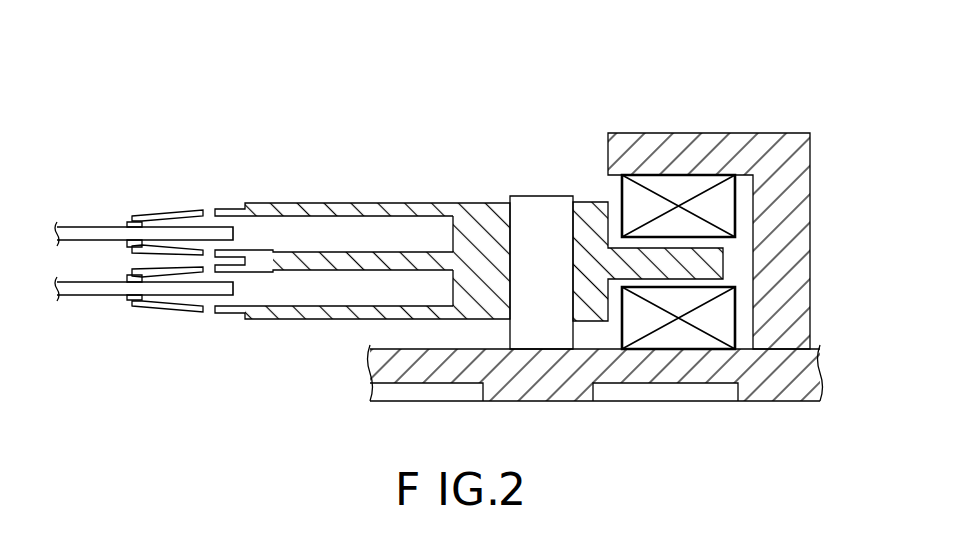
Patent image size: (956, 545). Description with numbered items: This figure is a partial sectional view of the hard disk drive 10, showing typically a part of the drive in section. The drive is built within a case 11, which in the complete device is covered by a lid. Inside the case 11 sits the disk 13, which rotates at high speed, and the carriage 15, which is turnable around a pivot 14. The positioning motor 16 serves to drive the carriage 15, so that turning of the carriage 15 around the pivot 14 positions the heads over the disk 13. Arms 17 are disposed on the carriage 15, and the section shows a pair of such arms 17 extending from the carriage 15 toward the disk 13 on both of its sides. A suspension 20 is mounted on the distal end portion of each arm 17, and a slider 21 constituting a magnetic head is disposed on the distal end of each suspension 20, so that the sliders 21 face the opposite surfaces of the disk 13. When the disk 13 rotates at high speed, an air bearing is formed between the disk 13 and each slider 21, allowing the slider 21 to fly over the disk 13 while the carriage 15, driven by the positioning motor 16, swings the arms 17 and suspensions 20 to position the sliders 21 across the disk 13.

The hard disk drive 10 is at (660, 90).
The case 11 is at (763, 402).
The disk 13 is at (73, 226).
The pivot 14 is at (543, 196).
The carriage 15 is at (404, 202).
The positioning motor 16 is at (673, 338).
The arm 17 is at (311, 202).
The suspension 20 is at (176, 213).
The slider 21 is at (126, 222).